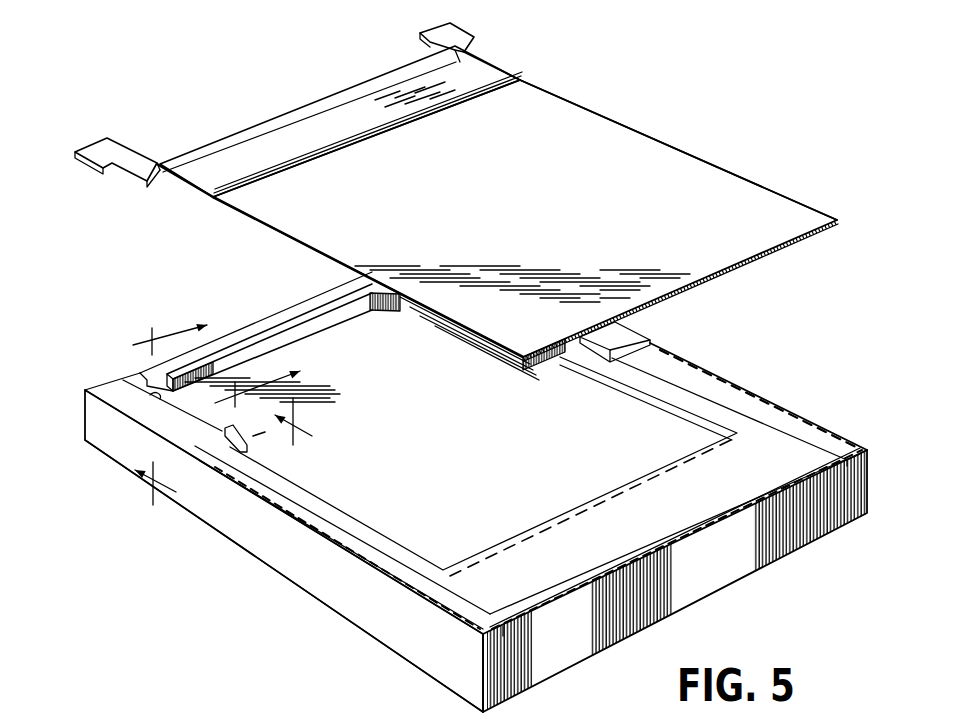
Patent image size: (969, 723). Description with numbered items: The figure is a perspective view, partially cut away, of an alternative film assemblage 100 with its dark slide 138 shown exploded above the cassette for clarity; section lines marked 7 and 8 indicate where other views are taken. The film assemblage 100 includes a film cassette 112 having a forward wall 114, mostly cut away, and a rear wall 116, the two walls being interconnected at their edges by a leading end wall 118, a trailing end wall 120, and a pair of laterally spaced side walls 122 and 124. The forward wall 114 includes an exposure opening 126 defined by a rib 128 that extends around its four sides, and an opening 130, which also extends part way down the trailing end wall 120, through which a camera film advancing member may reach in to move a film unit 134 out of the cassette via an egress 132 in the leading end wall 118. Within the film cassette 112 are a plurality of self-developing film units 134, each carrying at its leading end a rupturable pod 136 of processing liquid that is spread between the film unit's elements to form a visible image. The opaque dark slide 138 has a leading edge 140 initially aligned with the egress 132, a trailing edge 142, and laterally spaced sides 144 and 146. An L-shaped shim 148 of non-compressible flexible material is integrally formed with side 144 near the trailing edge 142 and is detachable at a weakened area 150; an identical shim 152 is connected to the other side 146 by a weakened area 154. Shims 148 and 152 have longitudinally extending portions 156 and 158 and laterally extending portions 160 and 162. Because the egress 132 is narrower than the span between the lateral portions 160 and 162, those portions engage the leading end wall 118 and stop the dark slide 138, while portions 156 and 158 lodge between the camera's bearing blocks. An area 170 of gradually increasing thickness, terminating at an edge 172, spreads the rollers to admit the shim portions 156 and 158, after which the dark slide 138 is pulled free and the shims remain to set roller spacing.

The film assemblage 100 is at (749, 148).
The film cassette 112 is at (720, 360).
The forward wall 114 is at (625, 332).
The rear wall 116 is at (320, 603).
The leading end wall 118 is at (545, 664).
The trailing end wall 120 is at (292, 314).
The side wall 122 is at (253, 532).
The side wall 124 is at (782, 410).
The exposure opening 126 is at (450, 434).
The rib 128 is at (307, 336).
The opening 130 is at (157, 400).
The egress 132 is at (841, 463).
The film unit 134 is at (511, 454).
The pod 136 is at (580, 537).
The dark slide 138 is at (612, 104).
The leading edge 140 is at (728, 272).
The trailing edge 142 is at (245, 124).
The side 144 is at (247, 242).
The side 146 is at (684, 148).
The shim 148 is at (119, 124).
The weakened area 150 is at (153, 160).
The shim 152 is at (510, 40).
The weakened area 154 is at (473, 56).
The longitudinally extending portion 156 is at (122, 163).
The longitudinally extending portion 158 is at (478, 42).
The laterally extending portion 160 is at (74, 153).
The laterally extending portion 162 is at (458, 22).
The area of gradual increasing thickness 170 is at (338, 145).
The edge 172 is at (356, 90).
The section line 7- 7 is at (231, 452).
The section line 8- 8 is at (206, 373).